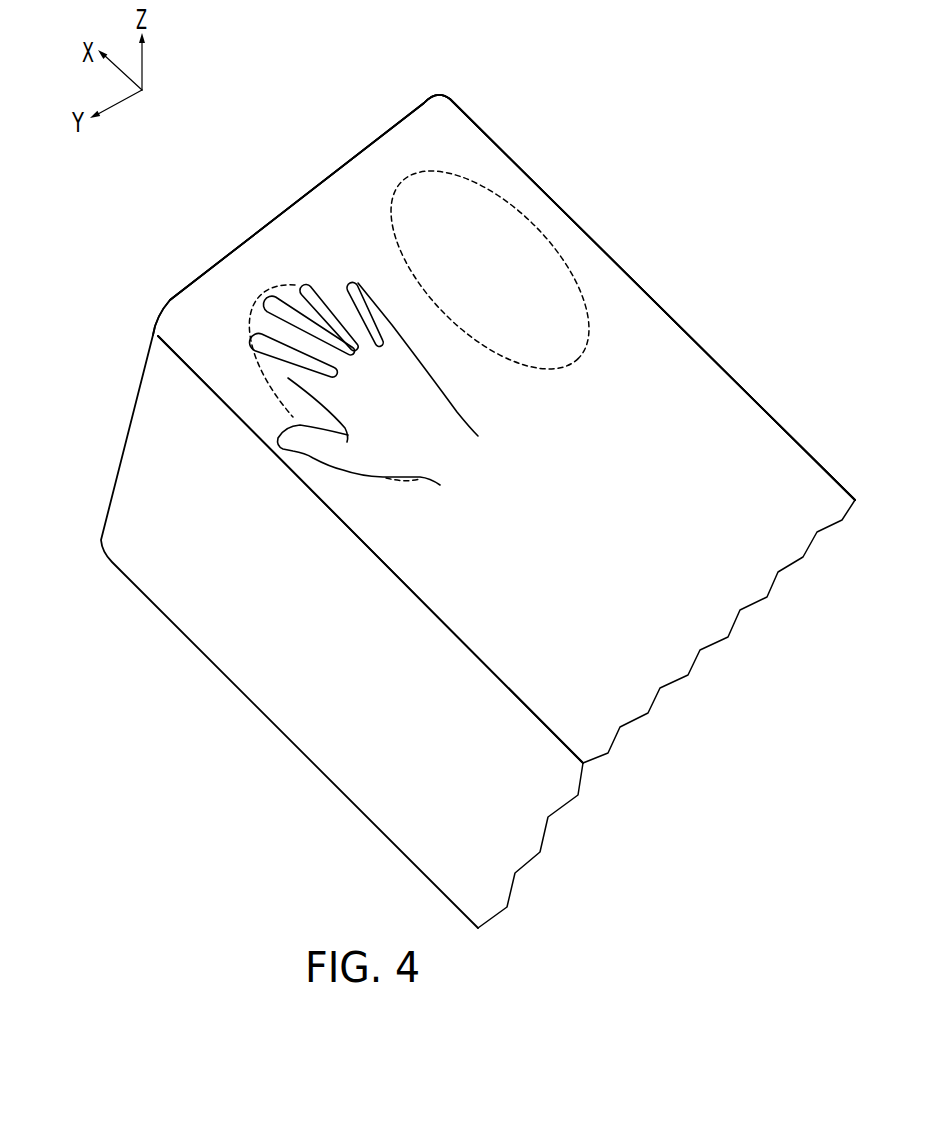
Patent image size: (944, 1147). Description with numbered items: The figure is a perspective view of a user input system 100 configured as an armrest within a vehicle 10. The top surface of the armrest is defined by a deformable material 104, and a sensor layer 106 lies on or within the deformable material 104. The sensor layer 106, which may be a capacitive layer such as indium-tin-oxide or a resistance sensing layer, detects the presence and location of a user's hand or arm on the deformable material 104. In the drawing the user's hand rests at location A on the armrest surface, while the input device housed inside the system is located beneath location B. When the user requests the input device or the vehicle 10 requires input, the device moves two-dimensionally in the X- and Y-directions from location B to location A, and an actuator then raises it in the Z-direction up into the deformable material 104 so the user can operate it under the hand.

The vehicle 10 is at (745, 91).
The user input system 100 is at (95, 352).
The deformable material 104 is at (621, 498).
The sensor layer 106 is at (410, 297).